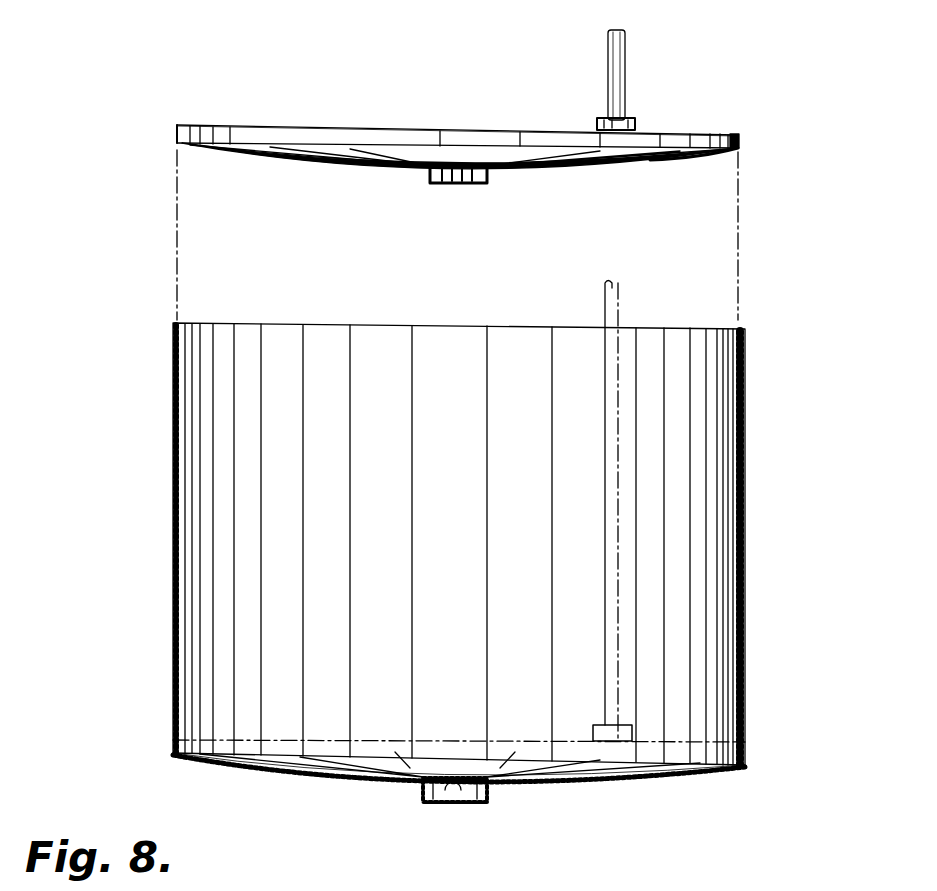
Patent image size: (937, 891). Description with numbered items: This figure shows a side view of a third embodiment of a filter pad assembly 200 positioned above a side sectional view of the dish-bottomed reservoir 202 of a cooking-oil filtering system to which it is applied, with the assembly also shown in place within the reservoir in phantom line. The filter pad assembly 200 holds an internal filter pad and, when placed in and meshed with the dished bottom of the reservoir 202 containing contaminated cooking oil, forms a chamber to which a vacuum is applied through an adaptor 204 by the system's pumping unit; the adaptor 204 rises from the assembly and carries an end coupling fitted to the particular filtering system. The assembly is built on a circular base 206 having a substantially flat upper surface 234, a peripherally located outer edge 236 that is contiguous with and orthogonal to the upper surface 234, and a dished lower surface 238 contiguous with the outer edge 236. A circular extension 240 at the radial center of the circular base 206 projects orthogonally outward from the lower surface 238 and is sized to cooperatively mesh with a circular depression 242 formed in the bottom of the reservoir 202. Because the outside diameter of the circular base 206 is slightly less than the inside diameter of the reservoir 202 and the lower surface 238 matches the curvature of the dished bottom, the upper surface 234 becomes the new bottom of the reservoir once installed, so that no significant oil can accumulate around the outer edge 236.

The filter pad assembly 200 is at (196, 106).
The reservoir 202 is at (745, 395).
The adaptor 204 is at (620, 64).
The circular base 206 is at (680, 122).
The upper surface 234 is at (735, 133).
The outer edge 236 is at (742, 148).
The lower surface 238 is at (572, 178).
The circular extension 240 is at (458, 186).
The circular depression 242 is at (425, 800).